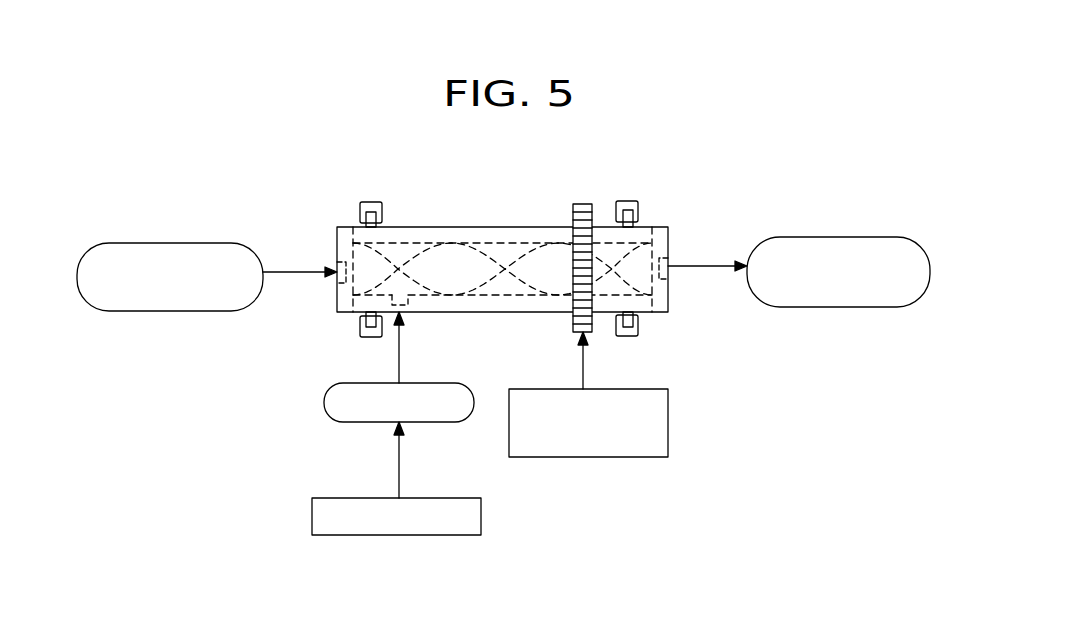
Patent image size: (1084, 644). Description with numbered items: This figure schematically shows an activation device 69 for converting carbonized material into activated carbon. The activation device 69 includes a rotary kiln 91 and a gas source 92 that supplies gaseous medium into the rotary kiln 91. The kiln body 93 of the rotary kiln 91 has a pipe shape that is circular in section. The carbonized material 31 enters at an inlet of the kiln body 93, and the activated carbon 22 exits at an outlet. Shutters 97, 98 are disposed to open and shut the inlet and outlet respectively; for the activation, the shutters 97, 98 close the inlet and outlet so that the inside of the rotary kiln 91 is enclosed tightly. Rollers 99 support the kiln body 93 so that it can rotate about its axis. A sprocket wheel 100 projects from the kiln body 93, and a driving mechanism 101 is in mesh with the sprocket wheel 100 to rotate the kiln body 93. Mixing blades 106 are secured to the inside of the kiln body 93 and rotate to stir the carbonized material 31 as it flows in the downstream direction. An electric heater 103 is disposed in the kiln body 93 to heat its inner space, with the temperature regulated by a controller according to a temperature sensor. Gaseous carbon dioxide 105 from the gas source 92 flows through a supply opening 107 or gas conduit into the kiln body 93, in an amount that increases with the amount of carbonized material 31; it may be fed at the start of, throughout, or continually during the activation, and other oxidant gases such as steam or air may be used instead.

The activation device 69 is at (621, 540).
The carbonized material 31 is at (176, 311).
The activated carbon 22 is at (842, 307).
The rotary kiln 91 is at (506, 277).
The gas source 92 is at (481, 516).
The kiln body 93 is at (533, 312).
The shutter 97 is at (337, 263).
The shutter 98 is at (668, 273).
The rollers 99 is at (362, 207).
The sprocket wheel 100 is at (580, 204).
The driving mechanism 101 is at (585, 458).
The electric heater 103 is at (493, 242).
The gaseous carbon dioxide 105 is at (439, 423).
The mixing blades 106 is at (432, 270).
The supply opening 107 is at (413, 313).